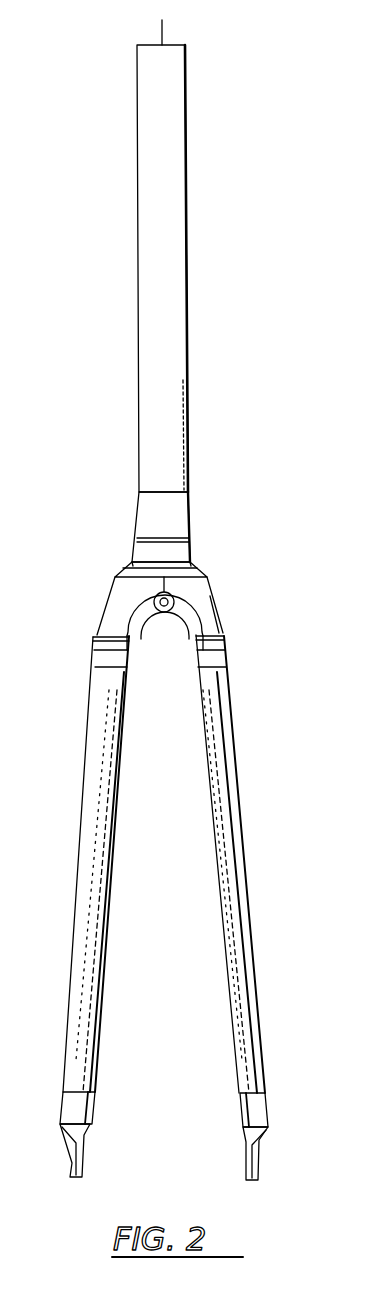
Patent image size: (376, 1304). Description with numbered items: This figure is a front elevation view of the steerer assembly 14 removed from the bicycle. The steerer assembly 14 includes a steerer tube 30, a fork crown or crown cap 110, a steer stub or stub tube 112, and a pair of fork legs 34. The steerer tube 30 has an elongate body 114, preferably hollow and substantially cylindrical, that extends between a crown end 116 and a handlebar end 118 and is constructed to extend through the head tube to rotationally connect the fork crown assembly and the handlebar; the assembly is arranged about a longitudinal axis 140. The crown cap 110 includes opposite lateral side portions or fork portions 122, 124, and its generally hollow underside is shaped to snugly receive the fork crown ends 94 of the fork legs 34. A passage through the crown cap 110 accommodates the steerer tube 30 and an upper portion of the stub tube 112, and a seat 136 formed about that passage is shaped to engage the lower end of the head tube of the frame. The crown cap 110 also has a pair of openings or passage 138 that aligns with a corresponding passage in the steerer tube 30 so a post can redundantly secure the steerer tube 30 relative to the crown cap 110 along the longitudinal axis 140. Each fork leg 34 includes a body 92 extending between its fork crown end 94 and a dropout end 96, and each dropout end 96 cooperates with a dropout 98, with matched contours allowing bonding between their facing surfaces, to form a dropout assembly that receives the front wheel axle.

The steerer assembly 14 is at (243, 320).
The steerer tube 30 is at (184, 268).
The fork leg 34 is at (185, 907).
The body 92 is at (92, 701).
The fork crown end 94 is at (186, 632).
The dropout end 96 is at (195, 1128).
The dropout 98 is at (107, 1126).
The crown cap 110 is at (157, 644).
The stub tube 112 is at (178, 514).
The elongate body 114 is at (173, 330).
The crown end 116 is at (121, 566).
The handlebar end 118 is at (192, 268).
The fork portion 122 is at (112, 622).
The fork portion 124 is at (222, 626).
The seat 136 is at (195, 572).
The passage 138 is at (154, 600).
The longitudinal axis 140 is at (163, 28).